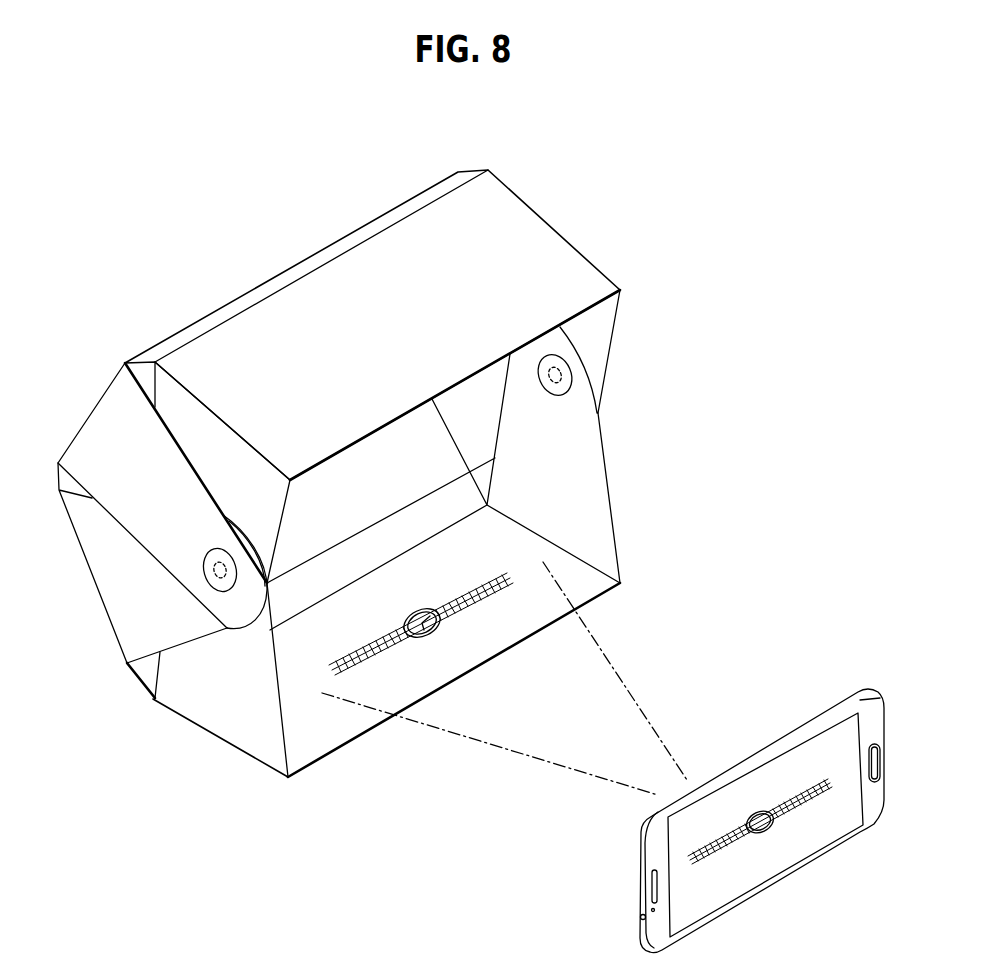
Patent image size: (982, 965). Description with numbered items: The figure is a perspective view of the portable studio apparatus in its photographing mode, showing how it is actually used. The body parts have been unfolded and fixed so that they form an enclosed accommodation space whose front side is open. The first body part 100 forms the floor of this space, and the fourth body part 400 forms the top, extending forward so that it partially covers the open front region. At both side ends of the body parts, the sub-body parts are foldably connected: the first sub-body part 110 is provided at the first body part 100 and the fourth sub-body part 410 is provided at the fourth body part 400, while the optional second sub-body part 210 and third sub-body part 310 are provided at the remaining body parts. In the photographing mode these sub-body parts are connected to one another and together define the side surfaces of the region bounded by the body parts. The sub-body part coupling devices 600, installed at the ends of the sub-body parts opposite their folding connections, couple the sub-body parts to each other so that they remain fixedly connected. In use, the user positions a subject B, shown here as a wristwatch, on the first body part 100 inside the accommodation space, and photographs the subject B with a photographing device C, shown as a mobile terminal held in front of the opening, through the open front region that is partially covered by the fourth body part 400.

The first body part 100 is at (315, 732).
The first sub-body part 110 is at (223, 712).
The second sub-body part 210 is at (127, 612).
The third sub-body part 310 is at (158, 542).
The fourth body part 400 is at (550, 245).
The fourth sub-body part 410 is at (200, 428).
The sub-body part coupling device 600 is at (213, 580).
The subject B is at (440, 635).
The photographing device C is at (795, 732).